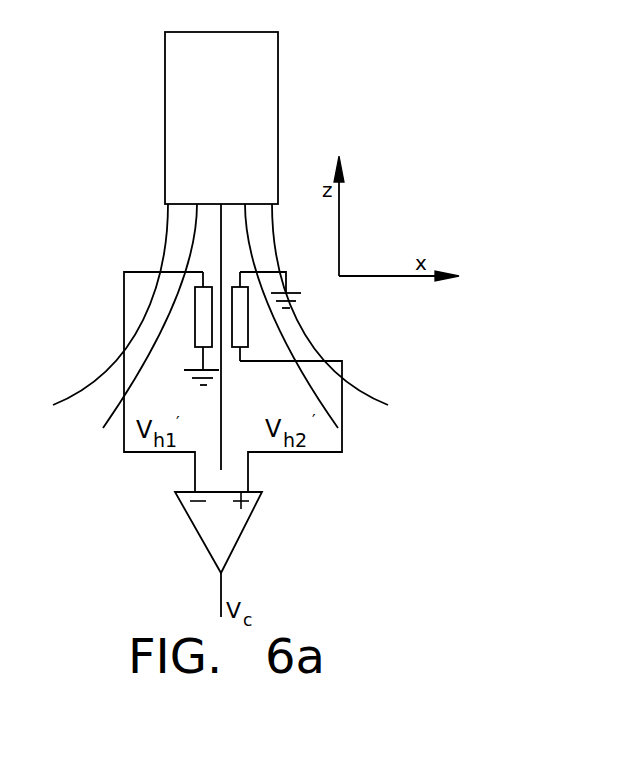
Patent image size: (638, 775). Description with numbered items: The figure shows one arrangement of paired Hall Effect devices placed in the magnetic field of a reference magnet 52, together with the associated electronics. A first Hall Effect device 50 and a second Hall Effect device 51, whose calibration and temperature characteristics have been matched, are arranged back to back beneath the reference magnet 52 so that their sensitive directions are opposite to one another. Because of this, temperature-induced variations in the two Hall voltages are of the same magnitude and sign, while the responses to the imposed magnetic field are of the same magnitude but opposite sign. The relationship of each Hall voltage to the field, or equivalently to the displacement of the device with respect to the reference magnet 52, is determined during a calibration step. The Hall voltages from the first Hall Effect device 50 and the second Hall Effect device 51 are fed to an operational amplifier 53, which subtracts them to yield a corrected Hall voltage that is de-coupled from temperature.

The first Hall Effect device 50 is at (191, 334).
The second Hall Effect device 51 is at (237, 334).
The reference magnet 52 is at (241, 120).
The operational amplifier 53 is at (231, 533).